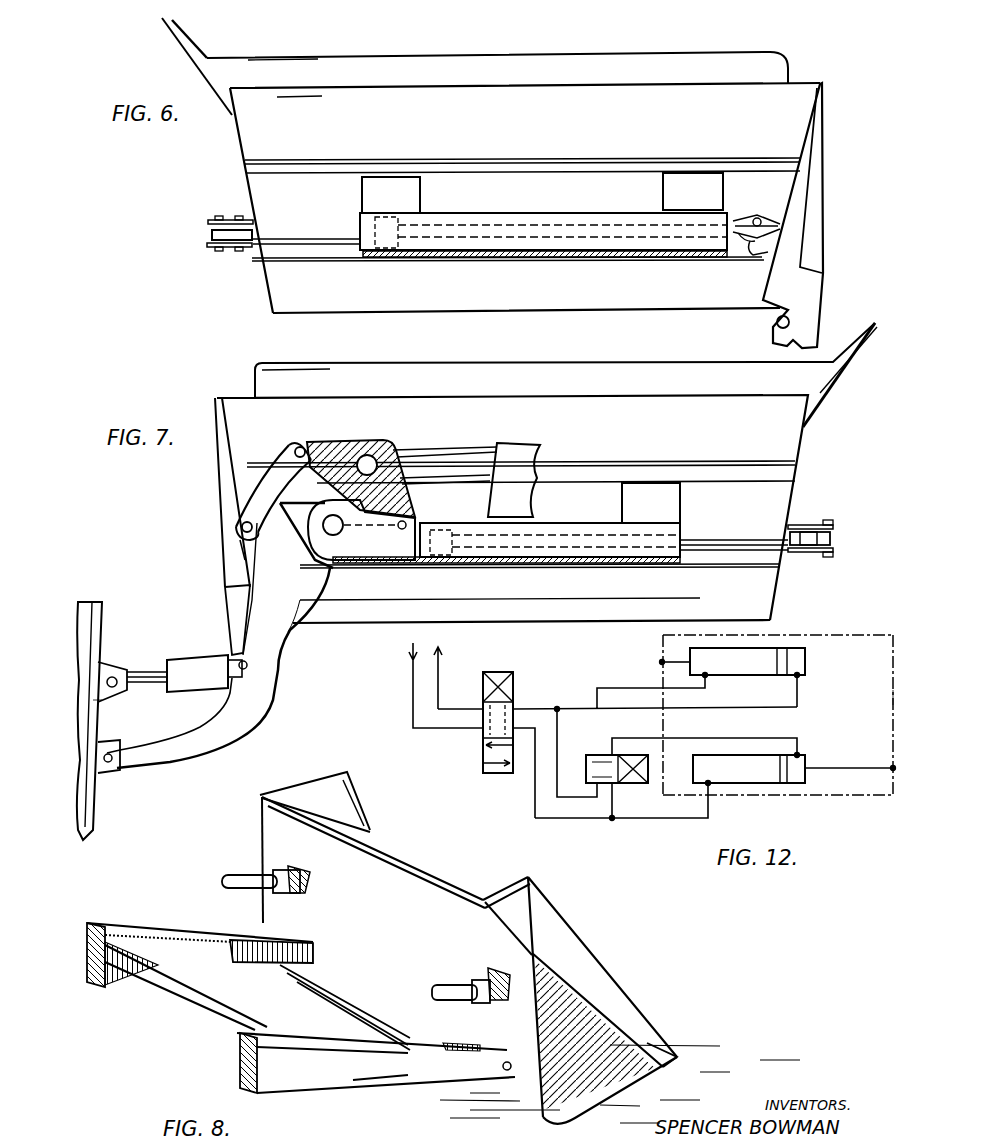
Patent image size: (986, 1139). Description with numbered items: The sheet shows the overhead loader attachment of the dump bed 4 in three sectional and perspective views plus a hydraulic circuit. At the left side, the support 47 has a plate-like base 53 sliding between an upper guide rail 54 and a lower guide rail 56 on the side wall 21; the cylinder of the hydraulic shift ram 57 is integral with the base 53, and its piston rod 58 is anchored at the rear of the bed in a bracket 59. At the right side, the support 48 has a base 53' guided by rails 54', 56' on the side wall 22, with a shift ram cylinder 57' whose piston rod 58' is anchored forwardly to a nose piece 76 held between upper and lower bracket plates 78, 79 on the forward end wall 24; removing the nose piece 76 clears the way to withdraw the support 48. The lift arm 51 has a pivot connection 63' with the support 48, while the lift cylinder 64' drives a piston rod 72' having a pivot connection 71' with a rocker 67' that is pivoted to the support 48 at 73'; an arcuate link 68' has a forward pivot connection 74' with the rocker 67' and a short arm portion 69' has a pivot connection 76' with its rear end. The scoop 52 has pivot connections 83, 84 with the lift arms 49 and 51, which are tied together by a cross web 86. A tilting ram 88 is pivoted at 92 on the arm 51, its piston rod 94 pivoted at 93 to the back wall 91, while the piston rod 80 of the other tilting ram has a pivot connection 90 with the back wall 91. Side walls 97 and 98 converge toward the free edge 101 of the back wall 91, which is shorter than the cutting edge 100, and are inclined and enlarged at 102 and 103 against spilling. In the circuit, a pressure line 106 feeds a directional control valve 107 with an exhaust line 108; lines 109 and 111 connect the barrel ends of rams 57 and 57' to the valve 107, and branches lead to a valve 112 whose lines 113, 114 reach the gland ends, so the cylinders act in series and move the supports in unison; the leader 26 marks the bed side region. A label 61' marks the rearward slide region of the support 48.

In FIG. 6, the dump bed 4 is at (464, 294).
In FIG. 7, the dump bed 4 is at (650, 441).
In FIG. 12, the dump bed 4 is at (852, 796).
In FIG. 12, the side wall 21 is at (773, 796).
In FIG. 12, the side wall 22 is at (837, 635).
In FIG. 12, the forward end wall 24 is at (660, 665).
In FIG. 6, the side bracket 26 is at (818, 267).
In FIG. 7, the side bracket 26 is at (218, 488).
In FIG. 12, the side bracket 26 is at (893, 702).
In FIG. 6, the fore and aft adjustable support 47 is at (556, 272).
In FIG. 7, the fore and aft shiftable support 48 is at (541, 581).
In FIG. 8, the lift arm 49 is at (296, 1080).
In FIG. 7, the lift arm 51 is at (260, 687).
In FIG. 8, the lift arm 51 is at (117, 924).
In FIG. 7, the scoop 52 is at (93, 602).
In FIG. 8, the scoop 52 is at (416, 935).
In FIG. 6, the plate like base 53 is at (528, 193).
In FIG. 7, the base 53' is at (667, 503).
In FIG. 6, the upper guide rail 54 is at (522, 155).
In FIG. 7, the upper guide rail 54' is at (521, 463).
In FIG. 6, the lower guide rail 56 is at (508, 271).
In FIG. 7, the lower guide rail 56' is at (540, 577).
In FIG. 6, the hydraulic shift ram 57 is at (543, 221).
In FIG. 12, the hydraulic shift ram 57 is at (763, 753).
In FIG. 7, the shift ram cylinder 57' is at (550, 531).
In FIG. 12, the shift ram cylinder 57' is at (766, 660).
In FIG. 6, the piston rod 58 is at (756, 213).
In FIG. 12, the piston rod 58 is at (850, 757).
In FIG. 7, the piston rod 58' is at (734, 531).
In FIG. 12, the piston rod 58' is at (651, 648).
In FIG. 6, the bracket 59 is at (762, 251).
In FIG. 7, the slide bar 61' is at (506, 578).
In FIG. 7, the pivot connection 63' is at (361, 530).
In FIG. 7, the lift cylinder 64' is at (514, 469).
In FIG. 7, the rocker 67' is at (361, 467).
In FIG. 7, the arcuate link 68' is at (273, 480).
In FIG. 7, the short arm portion 69' is at (216, 552).
In FIG. 7, the pivot connection 71' is at (383, 450).
In FIG. 7, the piston rod 72' is at (445, 462).
In FIG. 7, the pivot connection 73' is at (424, 514).
In FIG. 7, the forward pivot connection 74' is at (303, 437).
In FIG. 6, the nose piece 76 is at (262, 239).
In FIG. 7, the nose piece 76 is at (829, 534).
In FIG. 7, the pivot connection 76' is at (220, 530).
In FIG. 6, the upper bracket plate 78 is at (230, 219).
In FIG. 7, the upper bracket plate 78 is at (828, 525).
In FIG. 6, the lower bracket plate 79 is at (231, 252).
In FIG. 7, the lower bracket plate 79 is at (830, 552).
In FIG. 8, the piston rod 80 is at (455, 990).
In FIG. 8, the pivot connection 83 is at (513, 1056).
In FIG. 7, the pivot connection 84 is at (111, 755).
In FIG. 8, the pivot connection 84 is at (316, 953).
In FIG. 8, the cross web 86 is at (222, 997).
In FIG. 7, the tilting ram 88 is at (203, 667).
In FIG. 8, the pivot connection 90 is at (503, 1008).
In FIG. 7, the back wall 91 is at (99, 636).
In FIG. 8, the back wall 91 is at (421, 862).
In FIG. 7, the pivot 92 is at (246, 662).
In FIG. 7, the pivot 93 is at (108, 667).
In FIG. 8, the pivot 93 is at (313, 883).
In FIG. 7, the piston rod 94 is at (145, 670).
In FIG. 8, the piston rod 94 is at (244, 877).
In FIG. 8, the side wall 97 is at (573, 957).
In FIG. 8, the side wall 98 is at (348, 807).
In FIG. 8, the cutting edge 100 is at (653, 1041).
In FIG. 8, the free edge 101 is at (455, 886).
In FIG. 8, the inclined enlarged portion 102 is at (517, 875).
In FIG. 8, the inclined enlarged portion 103 is at (333, 782).
In FIG. 12, the pressure line 106 is at (412, 690).
In FIG. 12, the directional control valve 107 is at (503, 672).
In FIG. 12, the exhaust line 108 is at (440, 668).
In FIG. 12, the fluid line 109 is at (670, 820).
In FIG. 12, the fluid line 111 is at (760, 707).
In FIG. 12, the directional valve 112 is at (648, 784).
In FIG. 12, the line 113 is at (760, 738).
In FIG. 12, the line 114 is at (594, 690).